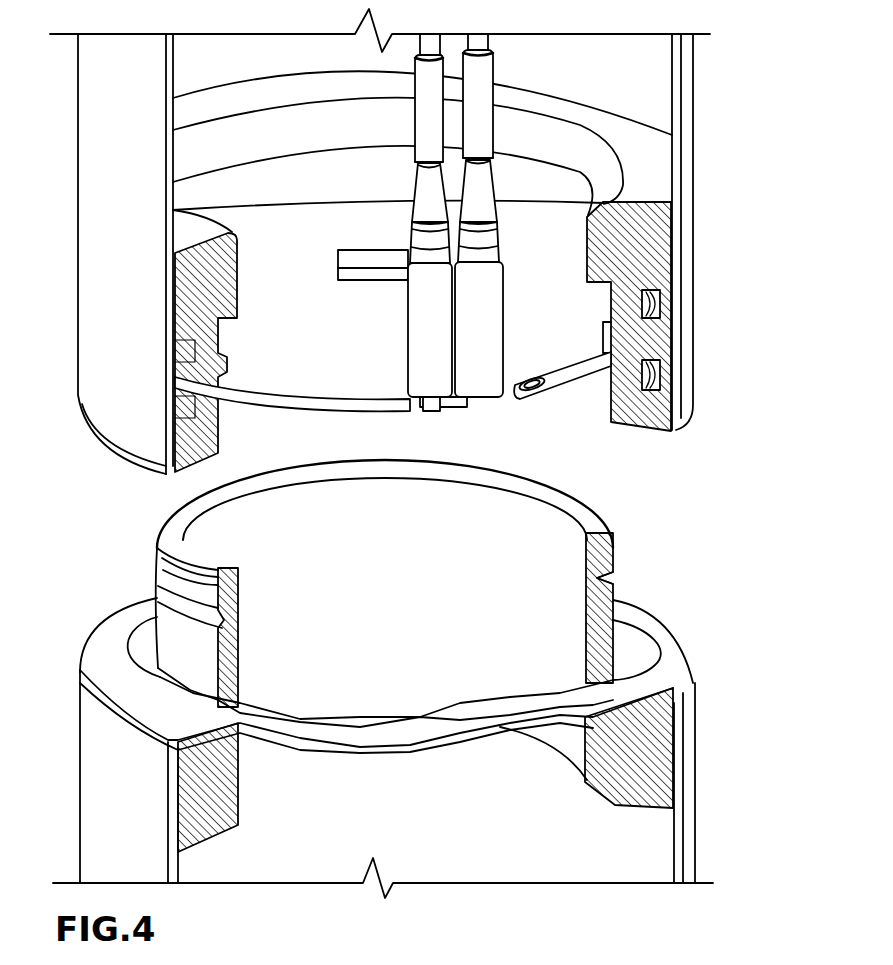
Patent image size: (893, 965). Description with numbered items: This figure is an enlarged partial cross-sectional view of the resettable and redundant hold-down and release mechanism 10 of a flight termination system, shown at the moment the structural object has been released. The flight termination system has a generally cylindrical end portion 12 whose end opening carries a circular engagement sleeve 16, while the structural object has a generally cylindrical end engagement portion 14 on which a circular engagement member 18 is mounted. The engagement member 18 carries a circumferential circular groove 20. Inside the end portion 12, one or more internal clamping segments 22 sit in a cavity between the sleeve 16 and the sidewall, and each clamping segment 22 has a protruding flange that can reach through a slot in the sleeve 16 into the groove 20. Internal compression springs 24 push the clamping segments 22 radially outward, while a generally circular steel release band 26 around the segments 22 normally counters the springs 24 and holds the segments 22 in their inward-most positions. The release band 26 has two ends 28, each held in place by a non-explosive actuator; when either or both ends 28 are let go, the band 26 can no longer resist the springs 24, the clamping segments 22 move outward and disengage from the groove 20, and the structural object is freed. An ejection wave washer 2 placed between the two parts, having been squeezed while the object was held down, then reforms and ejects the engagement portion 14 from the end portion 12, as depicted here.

The ejection wave washer 2 is at (640, 660).
The hold-down and release mechanism 10 is at (712, 272).
The end portion of the flight termination system 12 is at (93, 123).
The end engagement portion of the structural object 14 is at (688, 842).
The circular engagement sleeve 16 is at (643, 428).
The circular engagement member 18 is at (615, 553).
The circumferential circular groove 20 is at (600, 590).
The clamping segment 22 is at (613, 352).
The compression spring 24 is at (650, 302).
The circular release band 26 is at (580, 396).
The ends of the circular release band 28 is at (414, 405).